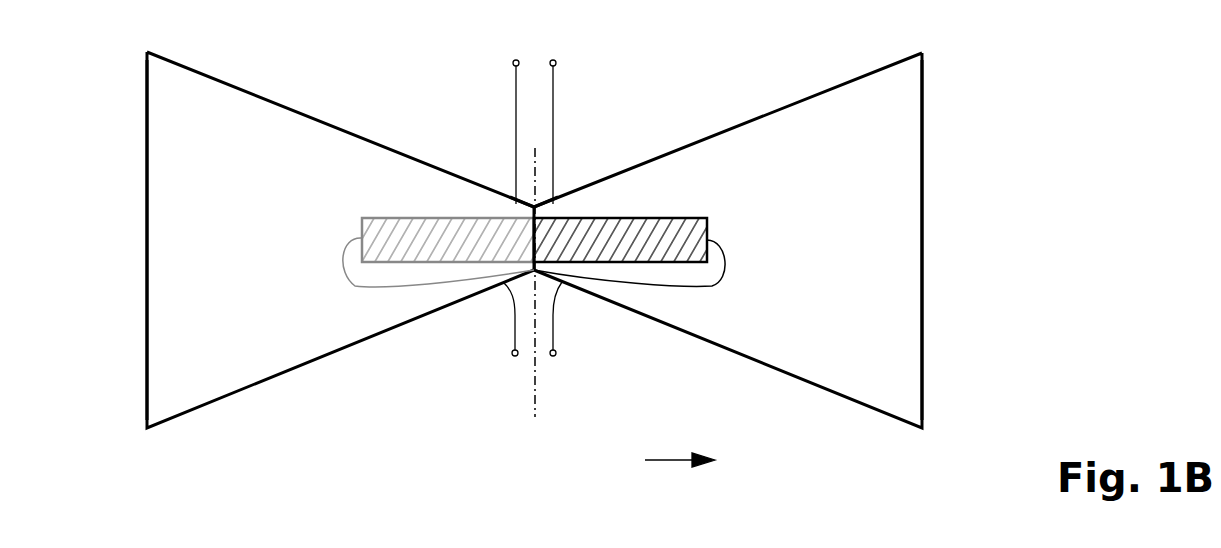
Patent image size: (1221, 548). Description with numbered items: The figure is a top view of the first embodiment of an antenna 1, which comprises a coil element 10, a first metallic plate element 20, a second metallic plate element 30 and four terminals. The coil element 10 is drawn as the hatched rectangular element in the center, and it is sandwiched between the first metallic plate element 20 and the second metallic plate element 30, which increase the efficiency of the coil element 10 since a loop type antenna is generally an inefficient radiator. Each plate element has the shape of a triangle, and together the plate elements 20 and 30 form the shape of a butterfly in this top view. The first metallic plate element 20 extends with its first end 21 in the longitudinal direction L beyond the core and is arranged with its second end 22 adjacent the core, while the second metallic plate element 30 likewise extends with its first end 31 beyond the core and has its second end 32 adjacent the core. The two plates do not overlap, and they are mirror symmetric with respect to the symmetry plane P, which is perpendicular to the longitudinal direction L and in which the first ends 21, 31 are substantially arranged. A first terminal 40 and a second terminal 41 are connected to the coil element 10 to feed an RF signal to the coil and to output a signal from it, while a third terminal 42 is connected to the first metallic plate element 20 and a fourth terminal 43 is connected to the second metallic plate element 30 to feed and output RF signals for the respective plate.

The antenna 1 is at (960, 90).
The coil element 10 is at (661, 218).
The first metallic plate element 20 is at (260, 388).
The first end of the first metallic plate element 21 is at (147, 236).
The second end of the first metallic plate element 22 is at (542, 214).
The second metallic plate element 30 is at (811, 387).
The first end of the second metallic plate element 31 is at (922, 236).
The second end of the second metallic plate element 32 is at (528, 214).
The first terminal 40 is at (511, 353).
The second terminal 41 is at (557, 353).
The third terminal 42 is at (512, 63).
The fourth terminal 43 is at (557, 63).
The symmetry plane P is at (536, 389).
The longitudinal direction L is at (668, 465).